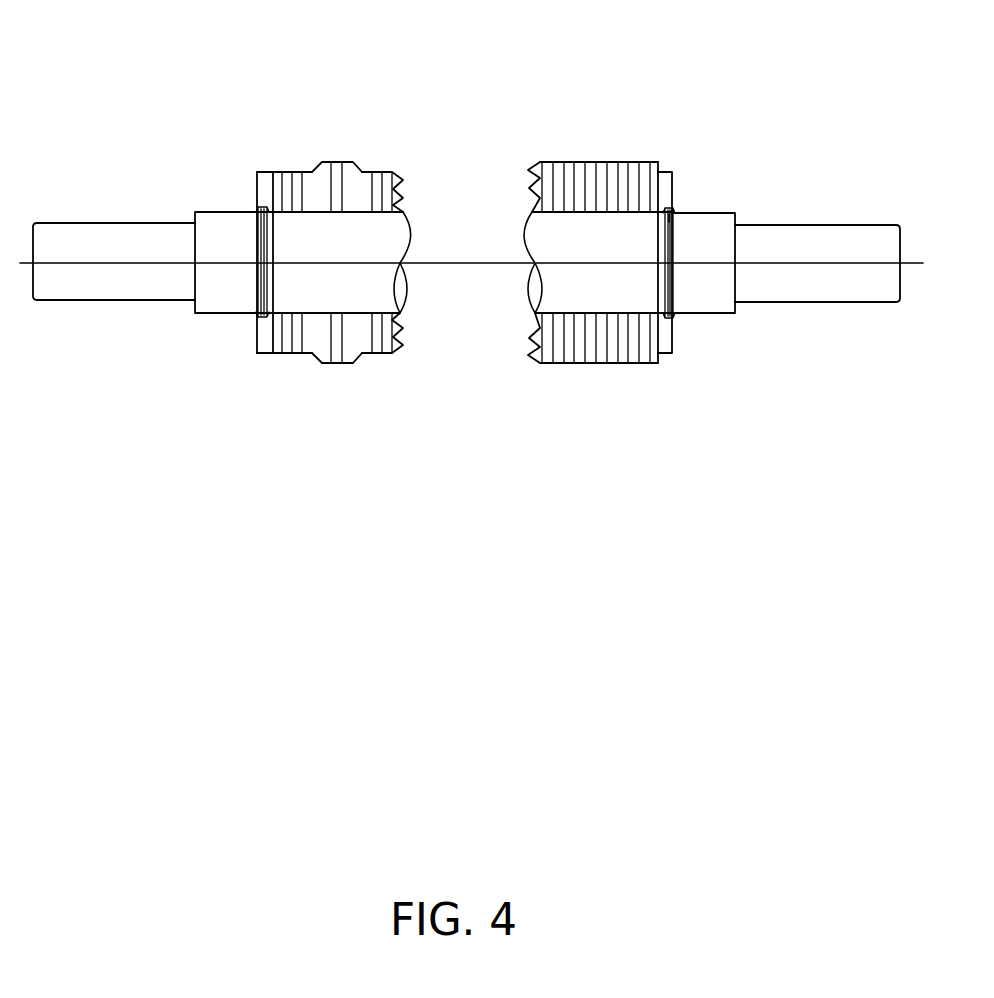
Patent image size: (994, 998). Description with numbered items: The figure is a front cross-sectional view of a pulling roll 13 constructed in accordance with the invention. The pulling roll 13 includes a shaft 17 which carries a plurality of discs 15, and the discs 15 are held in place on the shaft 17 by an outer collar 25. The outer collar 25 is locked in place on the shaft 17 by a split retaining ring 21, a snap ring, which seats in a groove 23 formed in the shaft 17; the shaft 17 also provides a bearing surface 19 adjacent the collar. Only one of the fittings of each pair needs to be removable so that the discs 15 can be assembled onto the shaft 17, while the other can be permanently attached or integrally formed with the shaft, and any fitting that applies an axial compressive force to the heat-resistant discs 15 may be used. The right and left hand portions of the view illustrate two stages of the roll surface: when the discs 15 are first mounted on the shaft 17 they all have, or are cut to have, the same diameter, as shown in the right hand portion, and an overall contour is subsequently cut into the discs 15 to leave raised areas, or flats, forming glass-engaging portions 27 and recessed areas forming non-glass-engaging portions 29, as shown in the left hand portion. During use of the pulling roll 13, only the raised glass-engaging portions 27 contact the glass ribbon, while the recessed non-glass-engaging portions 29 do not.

The pulling roll 13 is at (505, 413).
The disc 15 is at (560, 162).
The shaft 17 is at (847, 237).
The bearing surface 19 is at (703, 212).
The retaining ring 21 is at (672, 320).
The groove 23 is at (670, 215).
The outer collar 25 is at (673, 167).
The glass-engaging portions of roll surface 27 is at (332, 163).
The non-glass-engaging portions of roll surface 29 is at (292, 173).